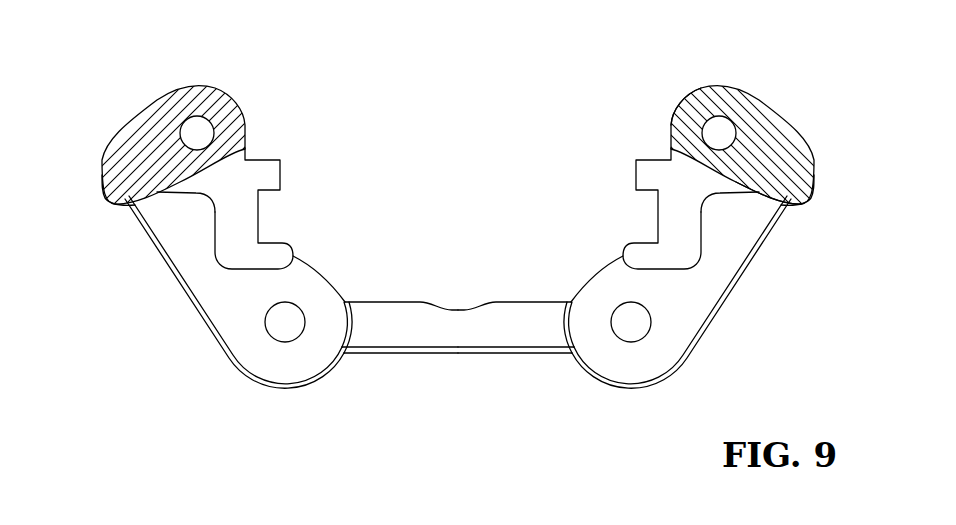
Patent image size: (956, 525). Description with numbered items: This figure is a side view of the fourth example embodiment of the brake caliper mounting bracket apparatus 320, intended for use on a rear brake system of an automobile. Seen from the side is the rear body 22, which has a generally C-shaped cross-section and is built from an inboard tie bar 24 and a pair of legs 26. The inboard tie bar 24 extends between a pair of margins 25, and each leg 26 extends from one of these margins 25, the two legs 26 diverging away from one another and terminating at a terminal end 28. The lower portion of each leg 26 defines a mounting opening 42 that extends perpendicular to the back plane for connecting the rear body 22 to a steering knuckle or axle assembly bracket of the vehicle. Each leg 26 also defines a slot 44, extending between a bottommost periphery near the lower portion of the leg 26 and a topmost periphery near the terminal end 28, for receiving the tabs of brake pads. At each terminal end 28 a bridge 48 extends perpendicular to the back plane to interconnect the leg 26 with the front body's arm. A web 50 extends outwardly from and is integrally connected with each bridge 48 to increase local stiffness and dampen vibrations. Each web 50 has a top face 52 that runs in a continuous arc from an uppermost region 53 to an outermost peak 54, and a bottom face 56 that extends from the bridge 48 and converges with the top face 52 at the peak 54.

The brake caliper mounting bracket apparatus 320 is at (573, 135).
The rear body 22 is at (228, 377).
The inboard tie bar 24 is at (423, 338).
The margins 25 is at (364, 322).
The legs 26 is at (217, 297).
The terminal end 28 is at (767, 200).
The mounting openings 42 is at (297, 325).
The slot 44 is at (262, 222).
The bridges 48 is at (220, 100).
The webs 50 is at (464, 141).
The top face 52 is at (740, 90).
The uppermost region 53 is at (193, 87).
The outermost peak 54 is at (105, 192).
The bottom face 56 is at (158, 198).